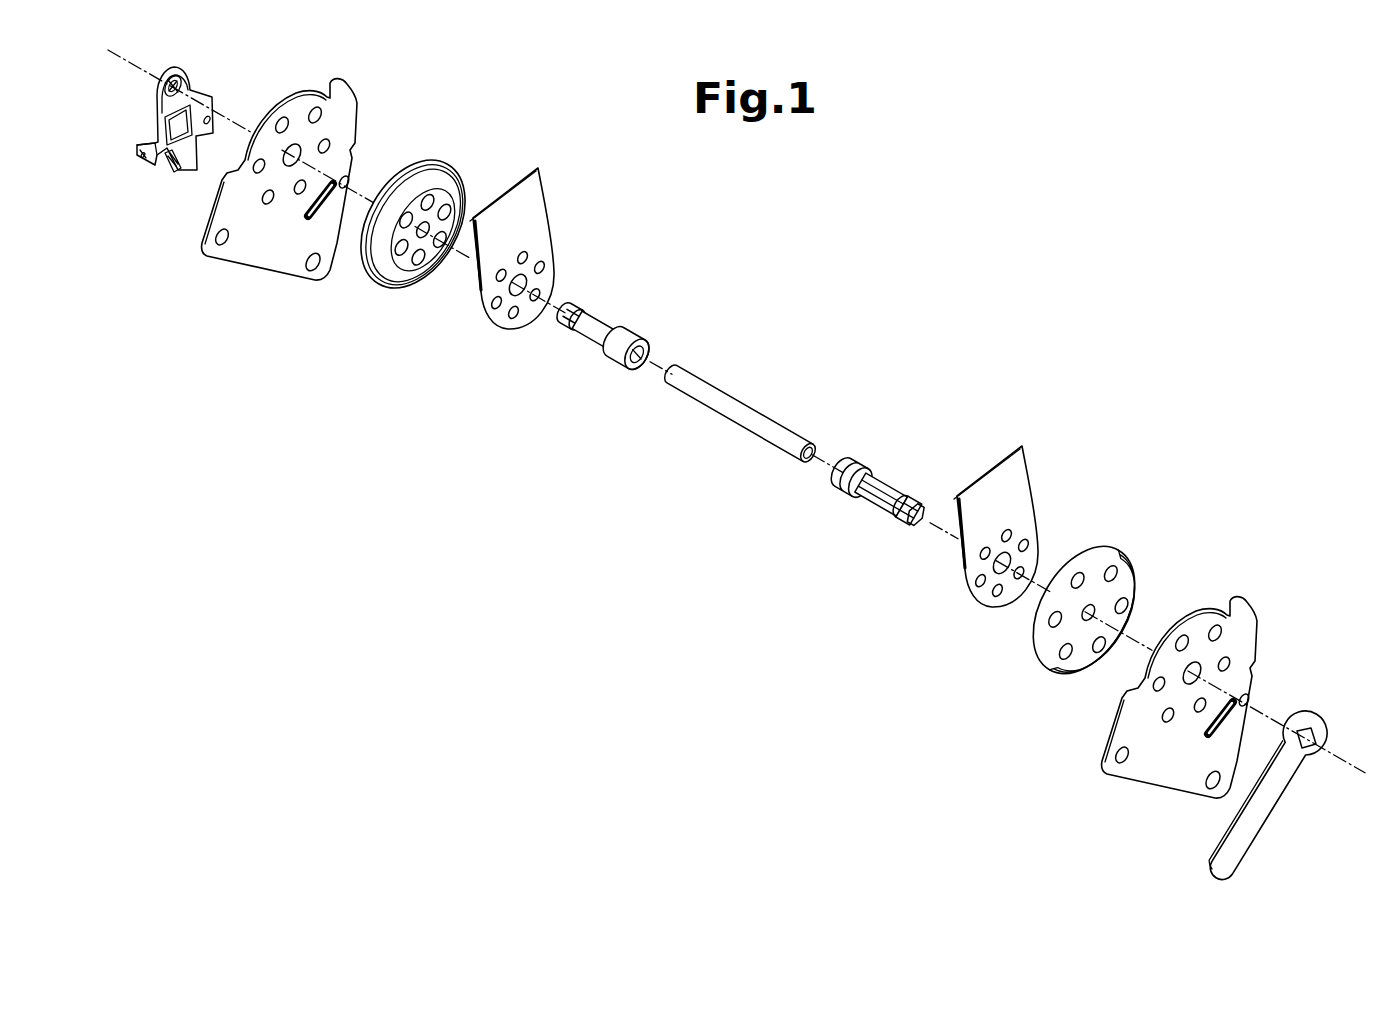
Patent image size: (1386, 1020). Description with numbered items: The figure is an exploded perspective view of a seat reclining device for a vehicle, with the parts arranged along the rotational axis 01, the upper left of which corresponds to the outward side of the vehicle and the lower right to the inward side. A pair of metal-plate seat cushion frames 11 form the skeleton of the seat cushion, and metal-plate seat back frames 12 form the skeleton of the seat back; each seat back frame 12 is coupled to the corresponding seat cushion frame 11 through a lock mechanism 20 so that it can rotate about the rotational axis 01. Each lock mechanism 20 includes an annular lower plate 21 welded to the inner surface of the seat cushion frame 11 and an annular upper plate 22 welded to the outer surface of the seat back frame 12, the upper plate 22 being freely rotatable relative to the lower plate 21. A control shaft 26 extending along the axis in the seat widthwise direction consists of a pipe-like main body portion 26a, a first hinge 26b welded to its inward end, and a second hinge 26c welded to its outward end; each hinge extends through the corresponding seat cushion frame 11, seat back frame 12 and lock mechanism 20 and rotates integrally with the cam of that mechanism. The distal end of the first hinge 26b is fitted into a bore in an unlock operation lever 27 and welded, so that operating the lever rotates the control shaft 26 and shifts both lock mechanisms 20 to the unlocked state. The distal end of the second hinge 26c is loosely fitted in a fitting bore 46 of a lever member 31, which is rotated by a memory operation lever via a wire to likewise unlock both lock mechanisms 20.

The rotational axis 01 is at (1335, 752).
The seat cushion frame 11 is at (267, 270).
The seat back frame 12 is at (543, 208).
The lock mechanism 20 is at (754, 410).
The lower plate 21 is at (1082, 658).
The upper plate 22 is at (400, 278).
The control shaft 26 is at (740, 413).
The main body portion 26a is at (750, 413).
The first hinge 26b is at (876, 473).
The second hinge 26c is at (638, 343).
The unlock operation lever 27 is at (1276, 803).
The lever member 31 is at (186, 147).
The fitting bore 46 is at (187, 81).